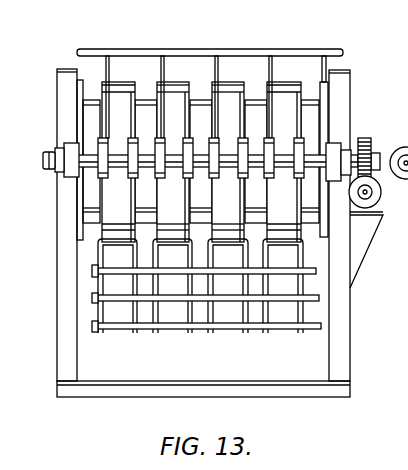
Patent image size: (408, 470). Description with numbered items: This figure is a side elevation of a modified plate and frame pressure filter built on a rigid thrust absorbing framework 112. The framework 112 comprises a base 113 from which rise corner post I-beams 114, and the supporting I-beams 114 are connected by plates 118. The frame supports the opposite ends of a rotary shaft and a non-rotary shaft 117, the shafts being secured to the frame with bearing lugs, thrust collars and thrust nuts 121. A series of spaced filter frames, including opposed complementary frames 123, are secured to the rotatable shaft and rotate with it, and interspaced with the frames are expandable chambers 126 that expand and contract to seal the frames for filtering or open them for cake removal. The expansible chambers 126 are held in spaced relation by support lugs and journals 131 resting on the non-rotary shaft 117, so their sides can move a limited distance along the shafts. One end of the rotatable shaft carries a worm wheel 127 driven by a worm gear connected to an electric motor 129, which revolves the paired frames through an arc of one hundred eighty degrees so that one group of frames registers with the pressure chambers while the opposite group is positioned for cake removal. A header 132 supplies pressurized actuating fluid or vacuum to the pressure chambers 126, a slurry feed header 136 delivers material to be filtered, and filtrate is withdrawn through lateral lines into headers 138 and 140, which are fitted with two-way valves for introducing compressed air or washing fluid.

The thrust absorbing framework 112 is at (100, 408).
The base 113 is at (137, 387).
The corner post I-beam 114 is at (341, 352).
The non-rotary shaft 117 is at (400, 174).
The plate 118 is at (60, 67).
The thrust nut 121 is at (53, 167).
The complementary frame 123 is at (117, 97).
The expandable chamber 126 is at (218, 51).
The worm wheel 127 is at (362, 140).
The electric motor 129 is at (369, 235).
The support lugs and journals 131 is at (242, 137).
The header 132 is at (220, 35).
The slurry feed header 136 is at (314, 274).
The header 138 is at (226, 298).
The header 140 is at (269, 330).